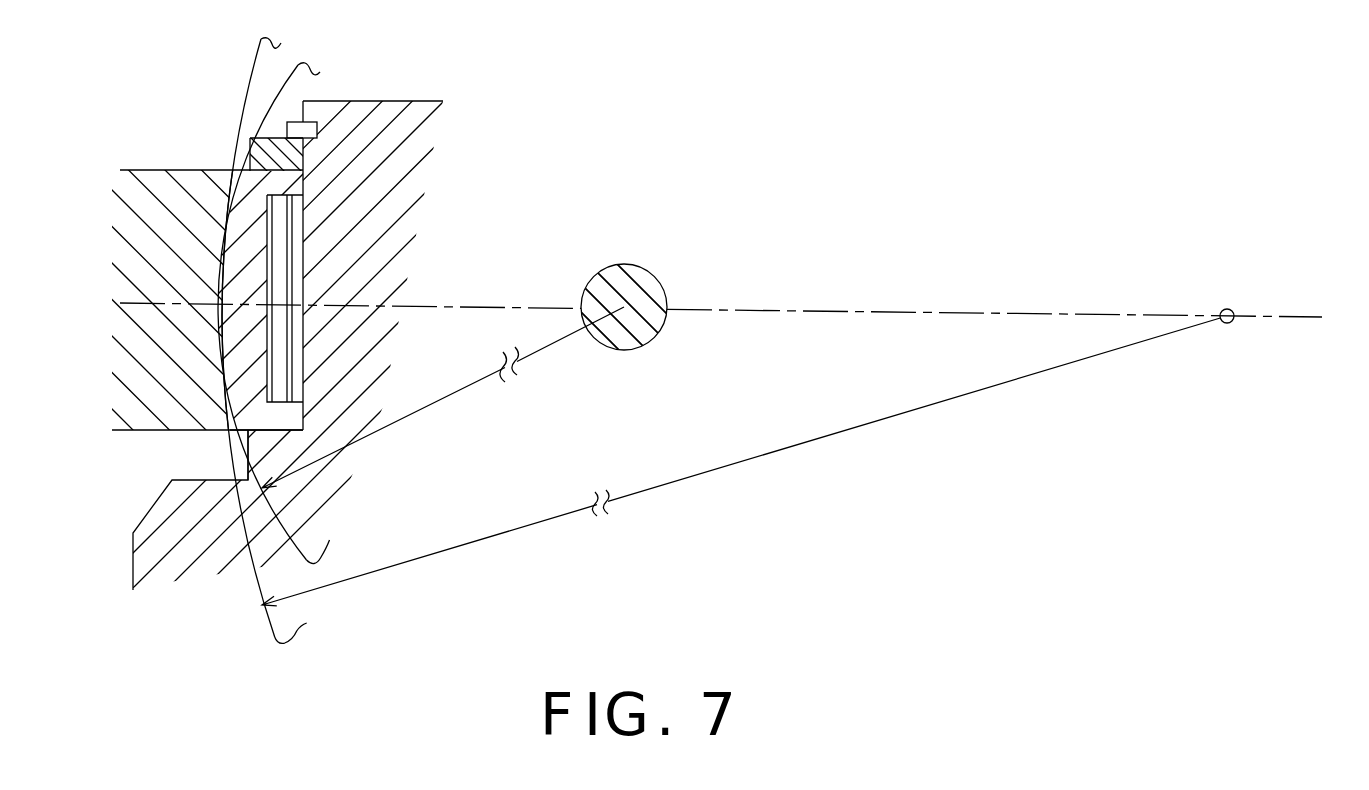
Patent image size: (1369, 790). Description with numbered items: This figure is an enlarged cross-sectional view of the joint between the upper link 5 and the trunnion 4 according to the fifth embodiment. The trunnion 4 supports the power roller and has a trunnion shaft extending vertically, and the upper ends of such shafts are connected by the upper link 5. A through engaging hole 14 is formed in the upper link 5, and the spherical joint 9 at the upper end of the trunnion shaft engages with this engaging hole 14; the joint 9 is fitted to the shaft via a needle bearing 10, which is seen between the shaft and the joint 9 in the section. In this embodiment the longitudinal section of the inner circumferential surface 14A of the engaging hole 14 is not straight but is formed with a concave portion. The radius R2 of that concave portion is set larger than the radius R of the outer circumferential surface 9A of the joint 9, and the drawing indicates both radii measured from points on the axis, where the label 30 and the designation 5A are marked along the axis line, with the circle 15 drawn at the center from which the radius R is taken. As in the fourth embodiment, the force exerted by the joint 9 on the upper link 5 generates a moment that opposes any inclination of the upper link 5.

The trunnion 4 is at (398, 98).
The upper link 5 is at (150, 168).
The optical axis of housing 5A is at (994, 313).
The spherical joint 9 is at (237, 433).
The outer circumferential surface 9A is at (250, 417).
The needle bearing 10 is at (293, 248).
The engaging hole 14 is at (227, 161).
The inner circumferential surface 14A is at (223, 188).
The light source 15 is at (660, 320).
The optical axis 30 is at (762, 307).
The radius R is at (477, 382).
The radius R2 is at (750, 460).